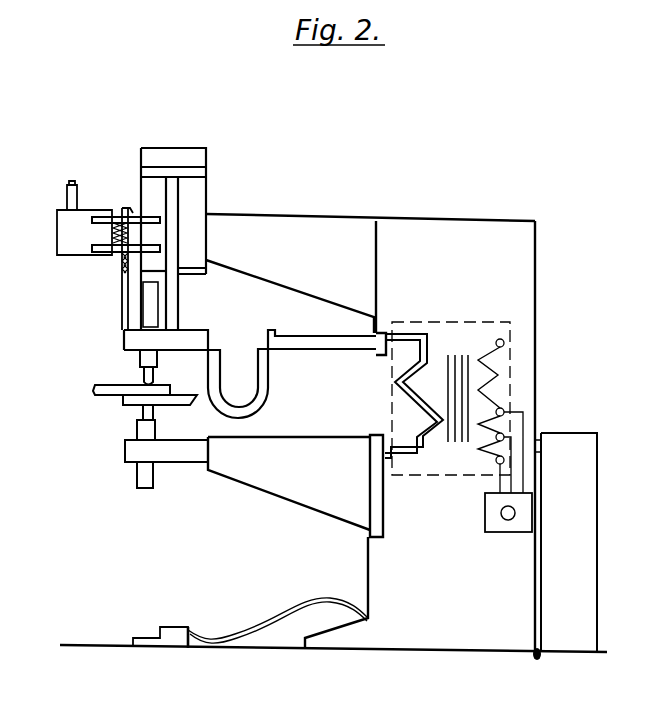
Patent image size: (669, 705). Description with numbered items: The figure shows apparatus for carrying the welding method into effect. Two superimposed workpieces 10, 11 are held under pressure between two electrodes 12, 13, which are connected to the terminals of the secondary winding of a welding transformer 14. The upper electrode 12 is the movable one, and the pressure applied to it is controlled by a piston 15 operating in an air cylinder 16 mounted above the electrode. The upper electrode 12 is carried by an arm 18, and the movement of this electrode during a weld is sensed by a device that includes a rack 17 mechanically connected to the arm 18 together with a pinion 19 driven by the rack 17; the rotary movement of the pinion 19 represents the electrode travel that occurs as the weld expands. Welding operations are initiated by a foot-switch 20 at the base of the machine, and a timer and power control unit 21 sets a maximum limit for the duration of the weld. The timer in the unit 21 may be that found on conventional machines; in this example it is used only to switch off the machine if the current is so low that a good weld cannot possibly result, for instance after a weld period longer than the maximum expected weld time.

The workpiece 10 is at (115, 394).
The workpiece 11 is at (170, 402).
The electrode 12 is at (156, 376).
The electrode 13 is at (142, 416).
The welding transformer 14 is at (470, 349).
The piston 15 is at (205, 172).
The air cylinder 16 is at (195, 160).
The rack 17 is at (122, 256).
The arm 18 is at (150, 337).
The pinion 19 is at (121, 226).
The foot-switch 20 is at (160, 627).
The timer and power control unit 21 is at (578, 491).